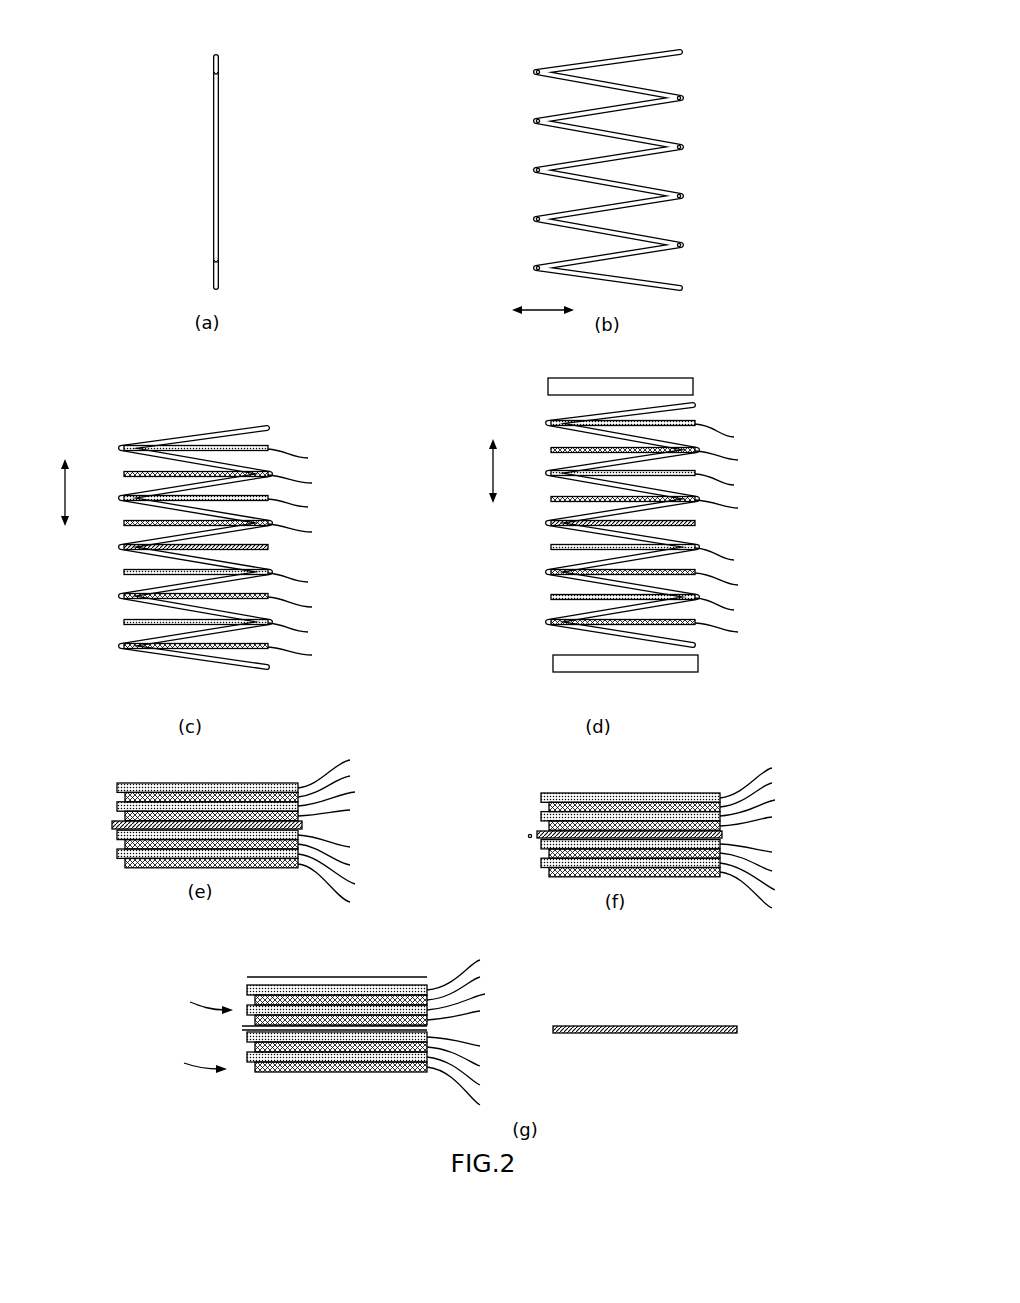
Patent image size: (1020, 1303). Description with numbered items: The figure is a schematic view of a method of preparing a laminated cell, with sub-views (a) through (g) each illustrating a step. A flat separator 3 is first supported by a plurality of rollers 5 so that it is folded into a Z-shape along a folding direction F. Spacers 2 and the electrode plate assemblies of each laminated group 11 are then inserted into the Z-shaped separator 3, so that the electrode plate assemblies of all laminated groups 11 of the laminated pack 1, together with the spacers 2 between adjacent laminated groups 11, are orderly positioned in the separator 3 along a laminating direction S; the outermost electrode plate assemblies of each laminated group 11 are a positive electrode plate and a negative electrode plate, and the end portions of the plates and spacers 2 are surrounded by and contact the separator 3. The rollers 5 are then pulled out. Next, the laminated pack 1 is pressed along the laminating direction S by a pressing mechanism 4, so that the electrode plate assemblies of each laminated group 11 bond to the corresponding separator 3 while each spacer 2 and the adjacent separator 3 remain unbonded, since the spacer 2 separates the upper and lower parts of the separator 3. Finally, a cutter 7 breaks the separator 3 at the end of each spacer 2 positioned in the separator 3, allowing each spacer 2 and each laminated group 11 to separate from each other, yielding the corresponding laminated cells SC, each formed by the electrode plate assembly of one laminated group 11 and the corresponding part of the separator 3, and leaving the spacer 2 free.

The laminated pack 1 is at (487, 768).
The spacer 2 is at (140, 549).
The separator 3 is at (214, 183).
The pressing mechanism 4 is at (565, 385).
The roller 5 is at (528, 72).
The cutter 7 is at (528, 837).
The laminated group 11 is at (384, 620).
The laminating direction S is at (287, 482).
The folding direction F is at (543, 300).
The laminated cell SC is at (194, 1032).